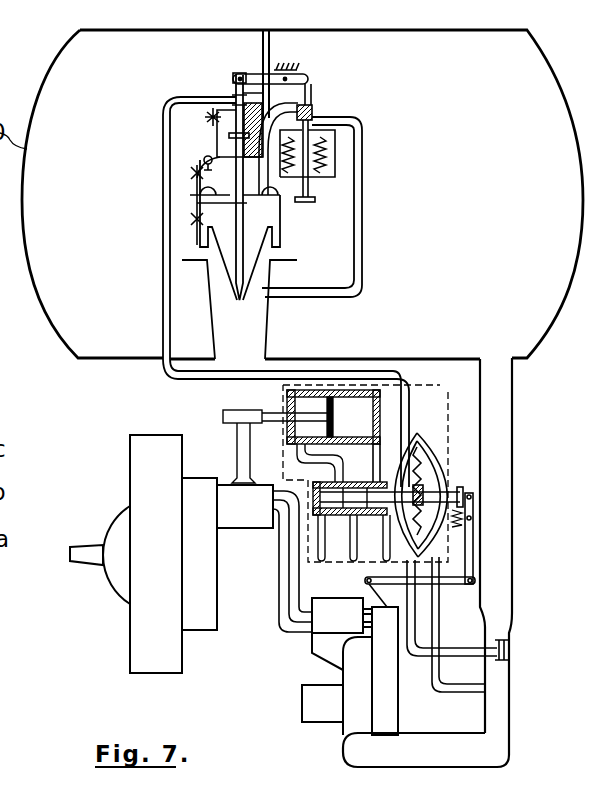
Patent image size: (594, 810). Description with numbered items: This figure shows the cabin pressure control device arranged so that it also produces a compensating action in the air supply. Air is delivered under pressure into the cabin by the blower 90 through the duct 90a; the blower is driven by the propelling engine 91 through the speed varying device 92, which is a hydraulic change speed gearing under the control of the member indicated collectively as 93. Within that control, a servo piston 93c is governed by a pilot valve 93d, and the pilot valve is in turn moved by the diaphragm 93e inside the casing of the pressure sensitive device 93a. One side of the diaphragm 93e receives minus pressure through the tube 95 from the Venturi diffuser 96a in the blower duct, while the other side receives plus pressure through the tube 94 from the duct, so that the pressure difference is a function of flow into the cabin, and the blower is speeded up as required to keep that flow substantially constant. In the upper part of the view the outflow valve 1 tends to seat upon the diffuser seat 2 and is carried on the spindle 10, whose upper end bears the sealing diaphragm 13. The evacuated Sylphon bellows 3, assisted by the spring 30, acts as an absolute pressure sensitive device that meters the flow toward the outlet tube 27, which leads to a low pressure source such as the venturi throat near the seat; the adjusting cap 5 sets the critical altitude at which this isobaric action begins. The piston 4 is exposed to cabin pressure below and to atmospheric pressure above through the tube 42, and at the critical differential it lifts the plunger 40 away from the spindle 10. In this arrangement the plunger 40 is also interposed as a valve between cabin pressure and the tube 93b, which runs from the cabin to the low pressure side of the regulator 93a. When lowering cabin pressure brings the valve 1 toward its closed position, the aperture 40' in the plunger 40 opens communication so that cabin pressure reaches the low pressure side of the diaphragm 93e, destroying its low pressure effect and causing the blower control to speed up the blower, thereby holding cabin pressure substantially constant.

The tube 42 is at (270, 48).
The aperture 40' is at (207, 82).
The plunger 40 is at (187, 131).
The piston 4 is at (195, 177).
The spindle 10 is at (245, 203).
The valve 1 is at (200, 246).
The sealing diaphragm 13 is at (280, 205).
The diffuser seat 2 is at (223, 287).
The spring 30 is at (330, 140).
The outlet tube 27 is at (362, 153).
The evacuated Sylphon bellows 3 is at (327, 170).
The adjusting cap 5 is at (313, 190).
The control member 93 is at (287, 393).
The servo piston 93c is at (337, 400).
The tube 93b is at (442, 468).
The pilot valve 93d is at (305, 458).
The pressure sensitive device 93a is at (445, 478).
The diaphragm 93e is at (443, 532).
The propelling engine 91 is at (122, 583).
The speed varying device 92 is at (312, 622).
The blower 90 is at (355, 660).
The duct 90a is at (493, 752).
The tube 94 is at (468, 692).
The tube 95 is at (453, 650).
The Venturi diffuser 96a is at (515, 638).